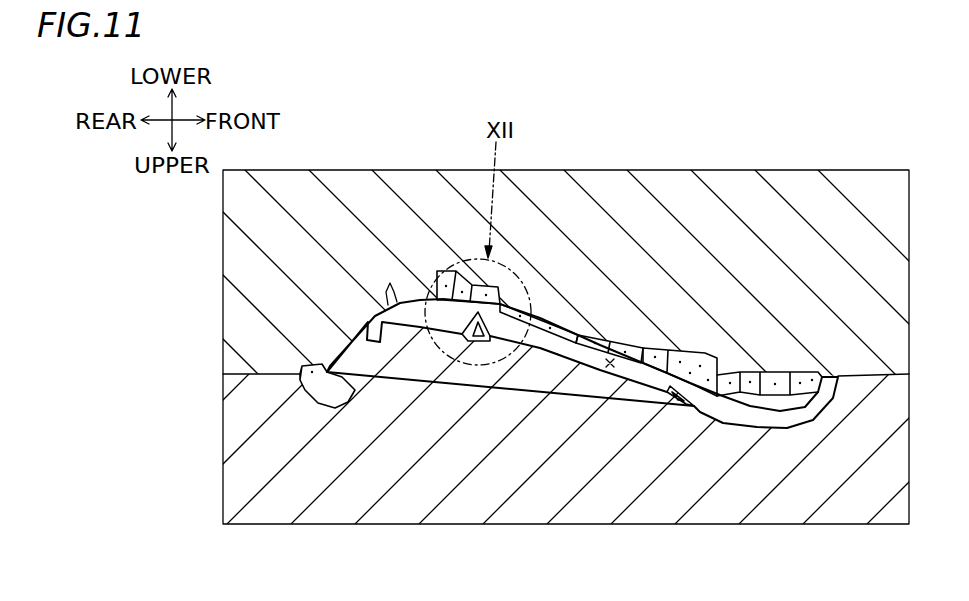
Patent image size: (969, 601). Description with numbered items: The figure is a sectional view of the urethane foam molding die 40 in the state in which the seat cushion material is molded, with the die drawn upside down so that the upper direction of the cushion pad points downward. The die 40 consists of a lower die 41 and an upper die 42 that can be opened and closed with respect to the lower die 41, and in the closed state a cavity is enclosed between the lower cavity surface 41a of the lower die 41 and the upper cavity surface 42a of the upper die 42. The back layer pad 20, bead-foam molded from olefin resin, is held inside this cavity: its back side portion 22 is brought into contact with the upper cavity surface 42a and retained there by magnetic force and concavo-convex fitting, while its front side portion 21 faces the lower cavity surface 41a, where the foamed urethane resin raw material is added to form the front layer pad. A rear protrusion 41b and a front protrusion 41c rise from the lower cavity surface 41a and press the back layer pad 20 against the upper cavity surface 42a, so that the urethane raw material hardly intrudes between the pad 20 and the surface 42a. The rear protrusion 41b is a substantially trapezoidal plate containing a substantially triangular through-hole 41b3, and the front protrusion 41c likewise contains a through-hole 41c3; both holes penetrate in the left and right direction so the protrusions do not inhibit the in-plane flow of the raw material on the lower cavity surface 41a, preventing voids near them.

The back layer pad 20 is at (707, 353).
The front side portion 21 is at (760, 412).
The back side portion 22 is at (641, 343).
The urethane foam molding die 40 is at (152, 278).
The lower die 41 is at (222, 447).
The upper die 42 is at (222, 289).
The lower cavity surface 41a is at (549, 352).
The rear protrusion 41b is at (503, 300).
The front protrusion 41c is at (668, 352).
The through-hole 41b3 is at (478, 342).
The through-hole 41c3 is at (683, 407).
The upper cavity surface 42a is at (577, 327).